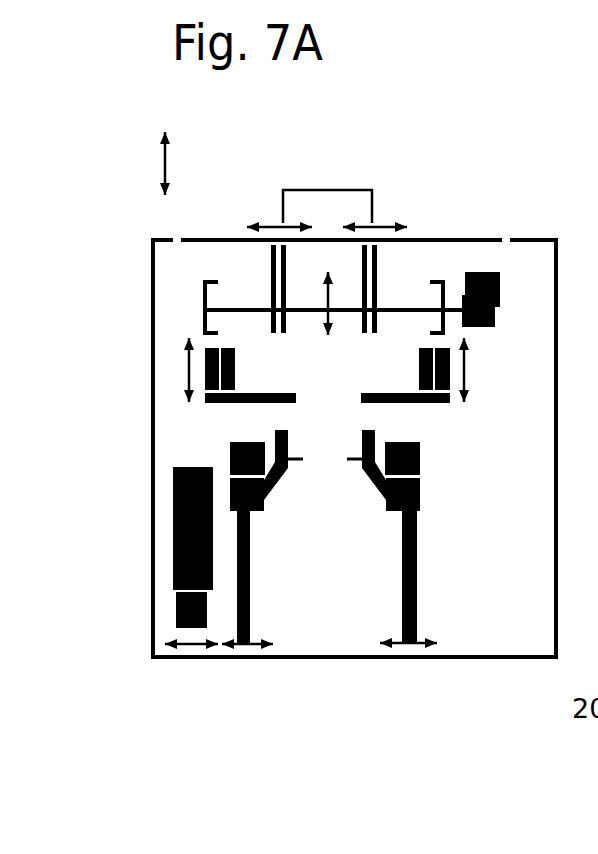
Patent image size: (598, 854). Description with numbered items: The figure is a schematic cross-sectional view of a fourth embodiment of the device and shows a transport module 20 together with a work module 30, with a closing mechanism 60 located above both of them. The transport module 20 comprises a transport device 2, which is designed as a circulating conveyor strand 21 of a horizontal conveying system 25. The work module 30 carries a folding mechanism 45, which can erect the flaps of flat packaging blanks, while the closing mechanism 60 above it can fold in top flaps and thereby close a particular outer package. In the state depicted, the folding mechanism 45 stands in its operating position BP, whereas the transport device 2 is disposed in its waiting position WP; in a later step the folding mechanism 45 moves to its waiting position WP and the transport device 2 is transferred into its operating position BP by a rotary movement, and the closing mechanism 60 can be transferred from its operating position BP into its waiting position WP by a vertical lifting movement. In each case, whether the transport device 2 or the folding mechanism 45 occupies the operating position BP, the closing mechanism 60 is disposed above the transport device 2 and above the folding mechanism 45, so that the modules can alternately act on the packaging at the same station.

The closing mechanism 60 is at (432, 150).
The transport device 2 is at (173, 497).
The circulating conveyor strand 21 is at (193, 528).
The horizontal conveying system 25 is at (168, 530).
The work module 30 is at (460, 537).
The folding mechanism 45 is at (352, 491).
The transport module 20 is at (170, 622).
The waiting position WP is at (155, 610).
The operating position BP is at (424, 458).